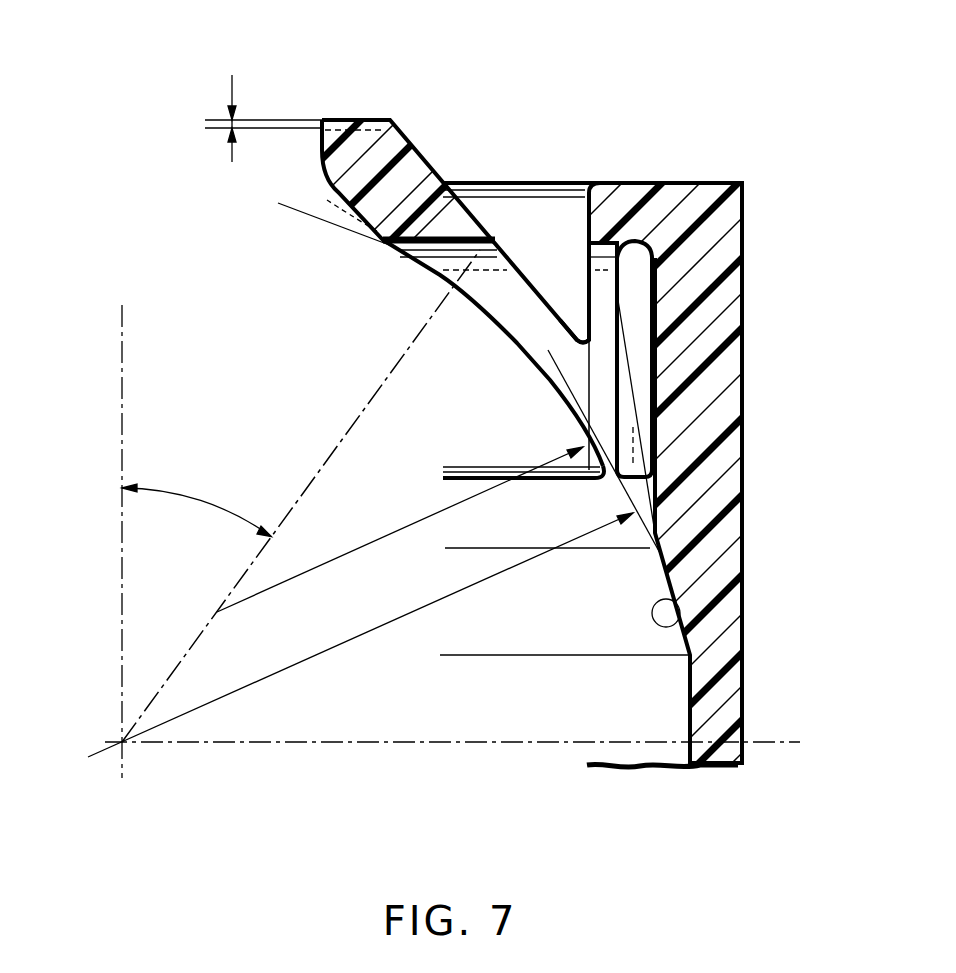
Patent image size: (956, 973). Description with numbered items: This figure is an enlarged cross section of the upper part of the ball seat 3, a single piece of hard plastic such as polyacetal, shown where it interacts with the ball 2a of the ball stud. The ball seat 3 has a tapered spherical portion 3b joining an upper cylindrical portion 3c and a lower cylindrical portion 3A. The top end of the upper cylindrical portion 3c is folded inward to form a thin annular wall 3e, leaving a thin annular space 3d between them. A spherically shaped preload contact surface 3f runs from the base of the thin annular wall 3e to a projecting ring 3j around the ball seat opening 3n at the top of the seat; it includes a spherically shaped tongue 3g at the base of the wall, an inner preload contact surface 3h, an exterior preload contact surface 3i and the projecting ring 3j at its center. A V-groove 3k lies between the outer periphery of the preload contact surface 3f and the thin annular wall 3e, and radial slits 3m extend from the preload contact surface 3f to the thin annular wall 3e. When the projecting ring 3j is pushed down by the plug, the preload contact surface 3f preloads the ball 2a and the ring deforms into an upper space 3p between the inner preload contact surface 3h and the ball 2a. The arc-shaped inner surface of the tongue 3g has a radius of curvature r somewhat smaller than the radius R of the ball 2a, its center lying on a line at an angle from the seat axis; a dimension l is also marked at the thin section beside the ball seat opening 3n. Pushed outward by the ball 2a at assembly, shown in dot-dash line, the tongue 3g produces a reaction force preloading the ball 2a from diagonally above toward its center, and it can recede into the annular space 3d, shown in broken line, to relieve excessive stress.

The ball seat 3 is at (480, 447).
The ball 2a is at (280, 205).
The lower cylindrical portion 3A is at (723, 770).
The tapered spherical portion 3b is at (693, 630).
The upper cylindrical portion 3c is at (725, 322).
The thin annular space 3d is at (643, 387).
The thin annular wall 3e is at (603, 292).
The preload contact surface 3f is at (440, 220).
The tongue 3g is at (623, 472).
The inner preload contact surface 3h is at (477, 303).
The exterior preload contact surface 3i is at (533, 290).
The projecting ring 3j is at (343, 120).
The V-groove 3k is at (543, 210).
The slits 3m is at (580, 377).
The ball seat opening 3n is at (250, 148).
The upper space 3p is at (357, 233).
The lip thickness l is at (213, 118).
The lip curvature radius r is at (400, 529).
The radius of ball R is at (360, 635).